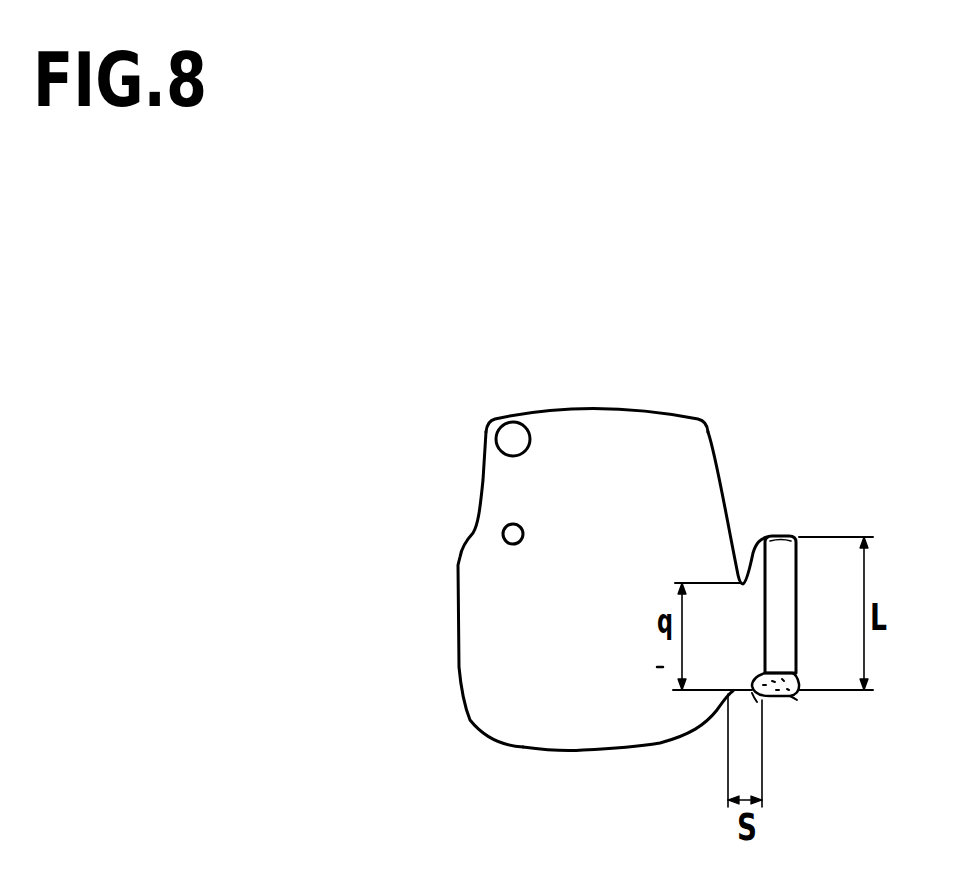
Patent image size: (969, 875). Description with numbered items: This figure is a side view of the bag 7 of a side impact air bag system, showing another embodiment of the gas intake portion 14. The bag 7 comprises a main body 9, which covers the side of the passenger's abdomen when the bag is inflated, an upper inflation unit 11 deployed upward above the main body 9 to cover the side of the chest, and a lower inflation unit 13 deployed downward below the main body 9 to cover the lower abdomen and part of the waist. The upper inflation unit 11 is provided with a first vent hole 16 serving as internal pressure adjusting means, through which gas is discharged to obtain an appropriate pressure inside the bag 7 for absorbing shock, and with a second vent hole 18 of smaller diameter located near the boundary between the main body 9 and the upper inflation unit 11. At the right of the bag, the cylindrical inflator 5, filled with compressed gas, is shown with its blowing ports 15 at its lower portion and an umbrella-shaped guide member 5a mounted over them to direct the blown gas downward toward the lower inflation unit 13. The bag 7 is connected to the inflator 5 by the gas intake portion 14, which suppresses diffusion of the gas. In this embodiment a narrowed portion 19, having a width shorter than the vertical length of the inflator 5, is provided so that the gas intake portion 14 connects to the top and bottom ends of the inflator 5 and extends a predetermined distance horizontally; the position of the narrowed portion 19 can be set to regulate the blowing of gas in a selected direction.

The inflator 5 is at (779, 552).
The guide member 5a is at (794, 673).
The bag 7 is at (419, 655).
The main body 9 is at (480, 585).
The upper inflation unit 11 is at (592, 420).
The lower inflation unit 13 is at (583, 738).
The gas intake portion 14 is at (755, 700).
The blowing ports 15 is at (795, 698).
The first vent hole 16 is at (512, 433).
The second vent hole 18 is at (503, 533).
The narrowed portion 19 is at (740, 578).